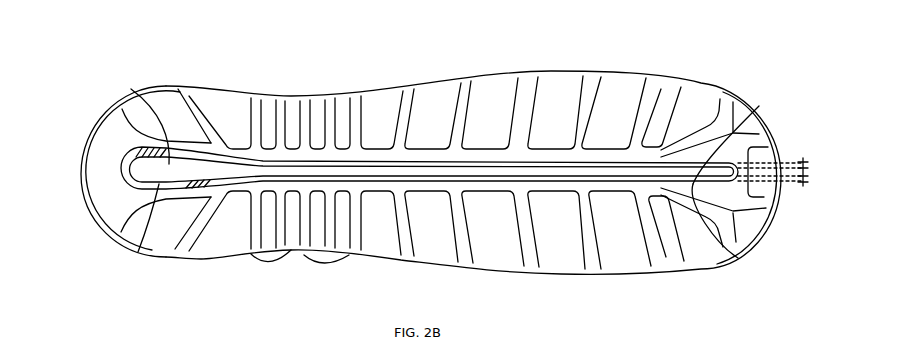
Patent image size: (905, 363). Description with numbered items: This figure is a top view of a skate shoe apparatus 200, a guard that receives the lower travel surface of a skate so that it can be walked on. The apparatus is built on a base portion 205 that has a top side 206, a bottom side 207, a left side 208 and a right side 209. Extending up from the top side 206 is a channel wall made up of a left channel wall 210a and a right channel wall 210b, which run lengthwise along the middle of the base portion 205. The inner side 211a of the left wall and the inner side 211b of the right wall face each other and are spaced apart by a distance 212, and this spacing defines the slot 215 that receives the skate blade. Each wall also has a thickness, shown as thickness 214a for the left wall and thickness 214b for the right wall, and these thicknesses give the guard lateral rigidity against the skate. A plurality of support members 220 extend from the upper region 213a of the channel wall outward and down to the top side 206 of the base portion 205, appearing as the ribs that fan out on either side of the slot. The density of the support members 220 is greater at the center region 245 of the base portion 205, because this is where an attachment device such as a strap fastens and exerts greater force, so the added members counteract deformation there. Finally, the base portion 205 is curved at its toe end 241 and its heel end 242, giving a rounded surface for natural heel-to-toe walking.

The skate shoe apparatus 200 is at (540, 57).
The base portion 205 is at (78, 177).
The top side 206 is at (432, 115).
The bottom side 207 is at (493, 286).
The left side 208 is at (353, 88).
The right side 209 is at (347, 256).
The left channel wall 210a is at (132, 91).
The right channel wall 210b is at (137, 256).
The inner side 211a is at (476, 172).
The inner side 211b is at (526, 176).
The distance 212 is at (808, 172).
The upper region 213a is at (714, 190).
The thickness 214a is at (806, 163).
The thickness 214b is at (808, 186).
The slot 215 is at (306, 174).
The support members 220 is at (305, 106).
The toe end 241 is at (755, 100).
The heel end 242 is at (76, 132).
The center region 245 is at (303, 262).